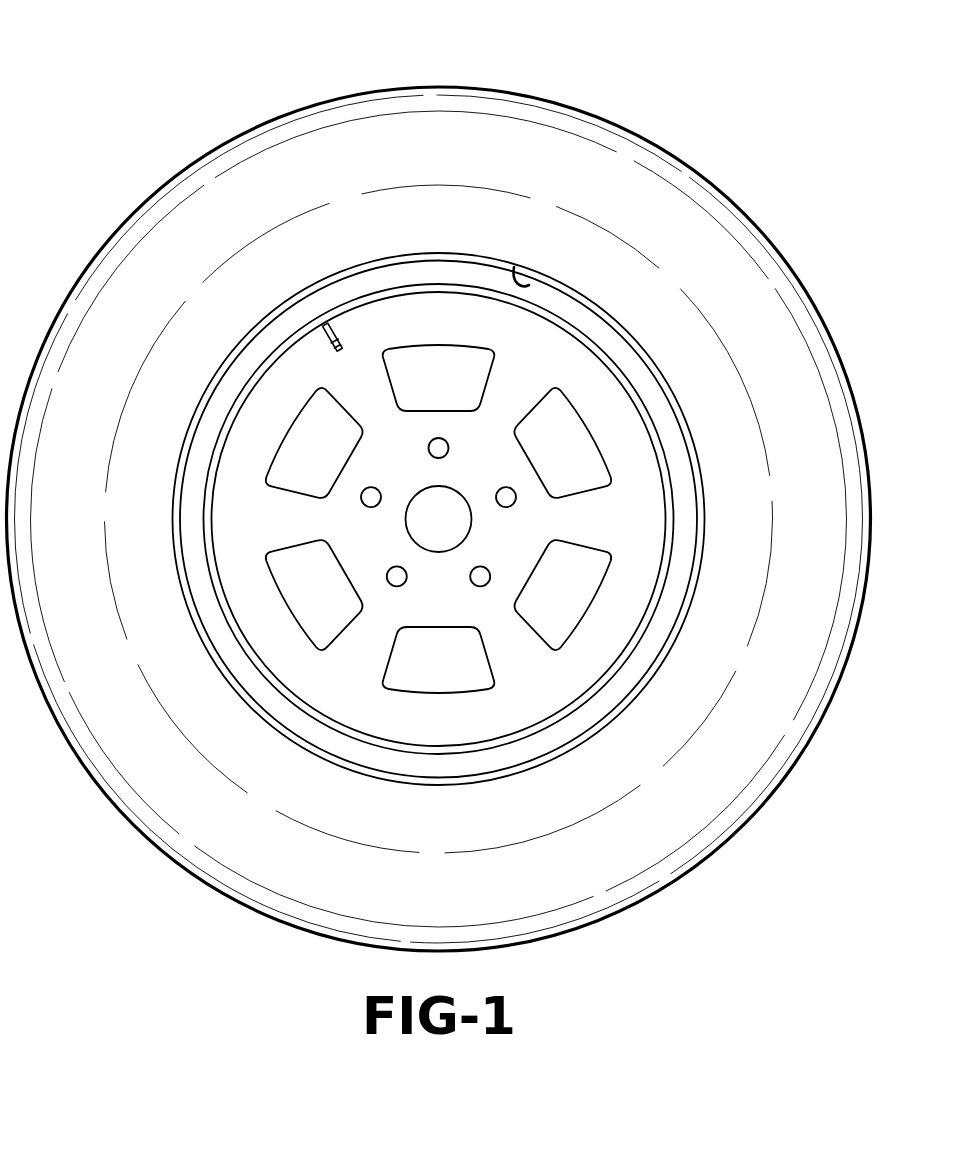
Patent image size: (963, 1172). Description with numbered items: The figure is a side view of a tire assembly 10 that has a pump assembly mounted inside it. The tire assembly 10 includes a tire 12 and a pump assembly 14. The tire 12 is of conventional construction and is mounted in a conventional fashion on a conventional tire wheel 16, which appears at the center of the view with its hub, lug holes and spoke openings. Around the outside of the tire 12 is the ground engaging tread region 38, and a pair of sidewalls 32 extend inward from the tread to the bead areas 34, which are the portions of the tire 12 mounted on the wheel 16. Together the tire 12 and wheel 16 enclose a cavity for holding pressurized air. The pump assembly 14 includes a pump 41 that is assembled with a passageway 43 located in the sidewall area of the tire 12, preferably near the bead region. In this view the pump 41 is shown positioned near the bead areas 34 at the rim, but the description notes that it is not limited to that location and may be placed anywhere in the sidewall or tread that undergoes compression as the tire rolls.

The tire assembly 10 is at (153, 100).
The tire 12 is at (158, 813).
The pump assembly 14 is at (380, 786).
The tire wheel 16 is at (543, 378).
The sidewalls 32 is at (738, 245).
The bead areas 34 is at (262, 350).
The ground engaging tread region 38 is at (672, 153).
The pump 41 is at (426, 253).
The passageway 43 is at (529, 285).